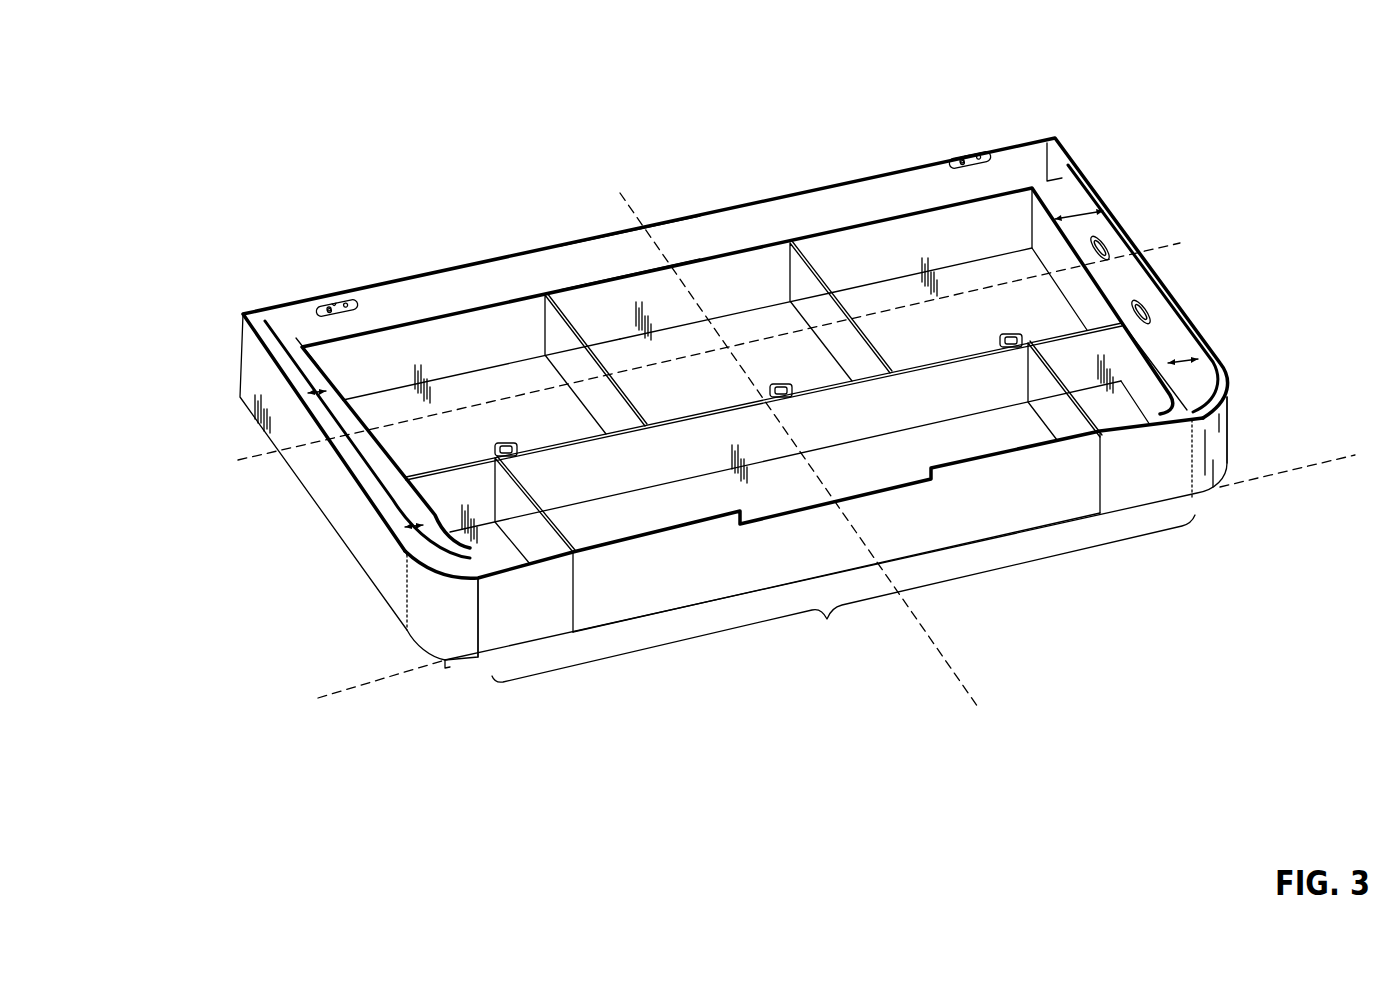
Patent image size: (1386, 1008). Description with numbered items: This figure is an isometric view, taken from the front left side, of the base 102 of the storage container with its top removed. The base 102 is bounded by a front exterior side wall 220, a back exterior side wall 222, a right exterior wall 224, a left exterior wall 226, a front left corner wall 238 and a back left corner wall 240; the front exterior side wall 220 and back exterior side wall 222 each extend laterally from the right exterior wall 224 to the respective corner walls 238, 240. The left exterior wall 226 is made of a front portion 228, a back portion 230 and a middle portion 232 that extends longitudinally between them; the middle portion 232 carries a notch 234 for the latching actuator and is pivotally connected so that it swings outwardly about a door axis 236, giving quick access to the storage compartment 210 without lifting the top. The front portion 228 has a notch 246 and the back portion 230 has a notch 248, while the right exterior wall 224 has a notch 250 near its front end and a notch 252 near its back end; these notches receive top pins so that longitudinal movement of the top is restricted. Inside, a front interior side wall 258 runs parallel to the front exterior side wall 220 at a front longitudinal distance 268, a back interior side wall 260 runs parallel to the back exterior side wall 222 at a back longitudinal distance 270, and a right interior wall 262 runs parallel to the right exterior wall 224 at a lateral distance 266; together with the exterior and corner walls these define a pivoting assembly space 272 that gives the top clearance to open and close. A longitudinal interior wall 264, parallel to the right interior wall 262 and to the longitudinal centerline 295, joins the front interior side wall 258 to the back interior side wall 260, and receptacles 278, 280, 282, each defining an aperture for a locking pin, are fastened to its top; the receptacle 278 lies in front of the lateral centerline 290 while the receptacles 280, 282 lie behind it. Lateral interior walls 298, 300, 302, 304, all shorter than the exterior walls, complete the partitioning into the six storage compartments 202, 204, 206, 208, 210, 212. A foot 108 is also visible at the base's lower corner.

The base 102 is at (197, 188).
The foot 108 is at (446, 665).
The storage compartment 202 is at (451, 334).
The storage compartment 204 is at (628, 288).
The storage compartment 206 is at (952, 248).
The storage compartment 208 is at (470, 549).
The storage compartment 210 is at (645, 520).
The storage compartment 212 is at (1120, 382).
The front exterior side wall 220 is at (285, 430).
The back exterior side wall 222 is at (1100, 203).
The right exterior wall 224 is at (607, 237).
The left exterior wall 226 is at (843, 598).
The front portion 228 is at (517, 569).
The back portion 230 is at (1172, 465).
The middle portion 232 is at (836, 572).
The notch 234 is at (882, 465).
The door axis 236 is at (1273, 478).
The front left corner wall 238 is at (441, 604).
The back left corner wall 240 is at (1205, 465).
The notch 246 is at (533, 567).
The notch 248 is at (1222, 428).
The notch 250 is at (335, 290).
The notch 252 is at (963, 150).
The front interior side wall 258 is at (313, 367).
The back interior side wall 260 is at (1048, 188).
The right interior wall 262 is at (716, 412).
The longitudinal interior wall 264 is at (718, 318).
The lateral distance 266 is at (297, 315).
The front longitudinal distance 268 is at (317, 390).
The back longitudinal distance 270 is at (1077, 212).
The pivoting assembly space 272 is at (470, 284).
The receptacle 278 is at (505, 450).
The receptacle 280 is at (740, 402).
The receptacle 282 is at (1000, 341).
The lateral centerline 290 is at (906, 606).
The longitudinal centerline 295 is at (255, 462).
The lateral interior wall 298 is at (563, 327).
The lateral interior wall 300 is at (780, 390).
The lateral interior wall 302 is at (553, 528).
The lateral interior wall 304 is at (1062, 418).